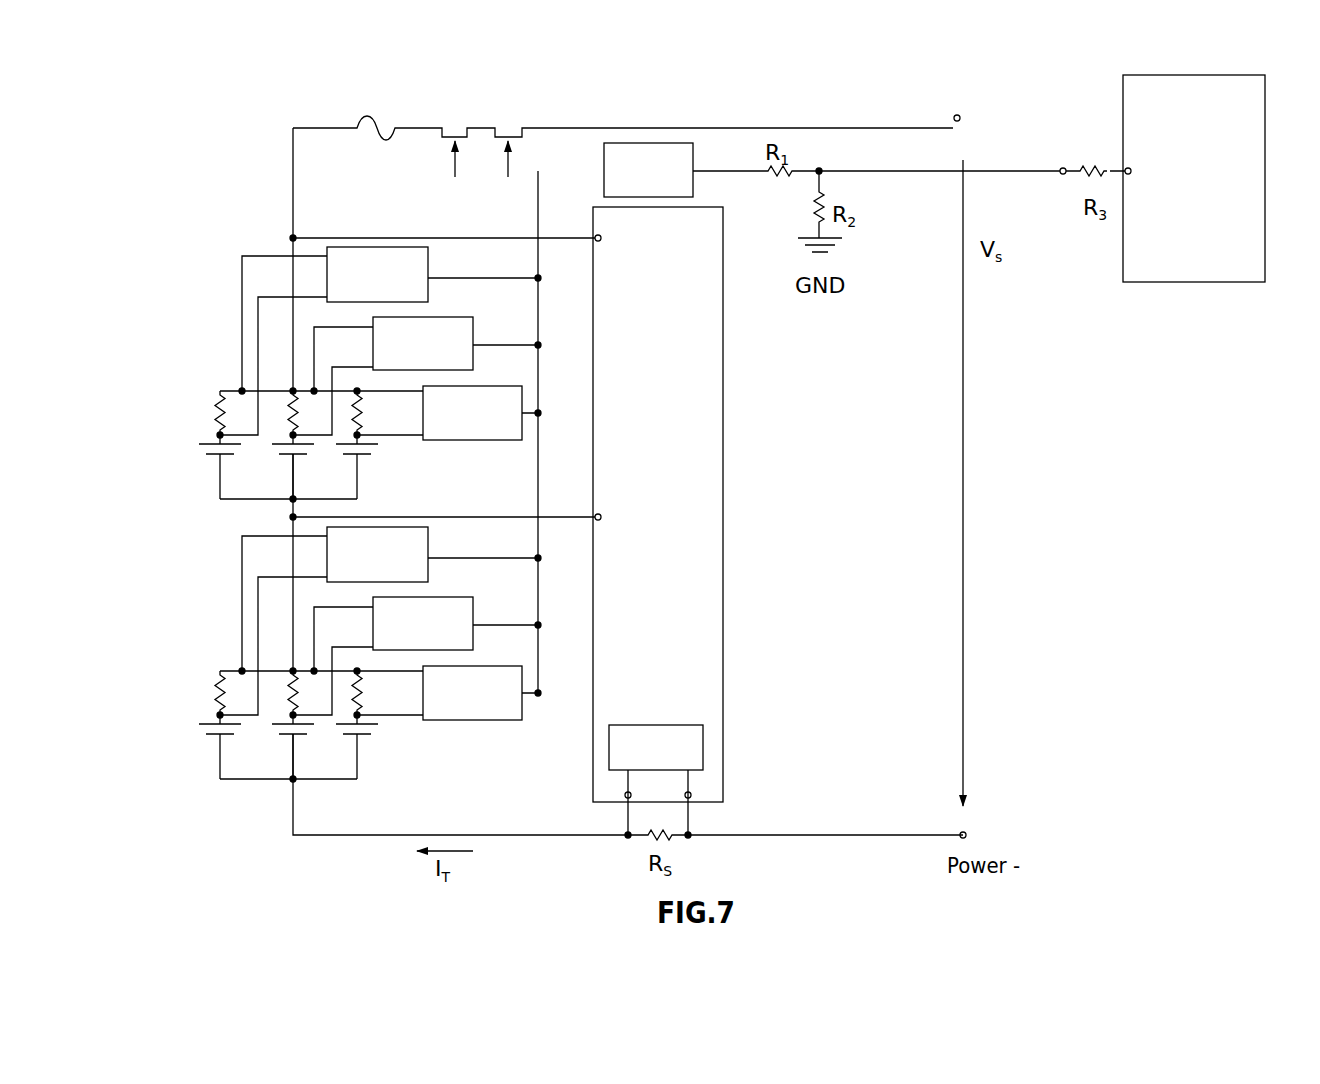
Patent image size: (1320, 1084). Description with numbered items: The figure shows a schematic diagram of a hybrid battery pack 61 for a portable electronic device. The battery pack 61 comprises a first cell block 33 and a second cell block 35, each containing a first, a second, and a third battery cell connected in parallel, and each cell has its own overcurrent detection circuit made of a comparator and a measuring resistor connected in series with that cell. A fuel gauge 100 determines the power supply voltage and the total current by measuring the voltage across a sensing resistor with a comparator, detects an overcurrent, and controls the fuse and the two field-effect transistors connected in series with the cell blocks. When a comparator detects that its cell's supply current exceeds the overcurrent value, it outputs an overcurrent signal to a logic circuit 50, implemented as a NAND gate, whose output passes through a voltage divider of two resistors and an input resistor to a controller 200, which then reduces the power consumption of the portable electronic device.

The hybrid battery pack 61 is at (258, 151).
The first cell block 33 is at (213, 363).
The second cell block 35 is at (213, 797).
The logic circuit 50 is at (648, 170).
The fuel gauge 100 is at (658, 522).
The controller 200 is at (1194, 178).